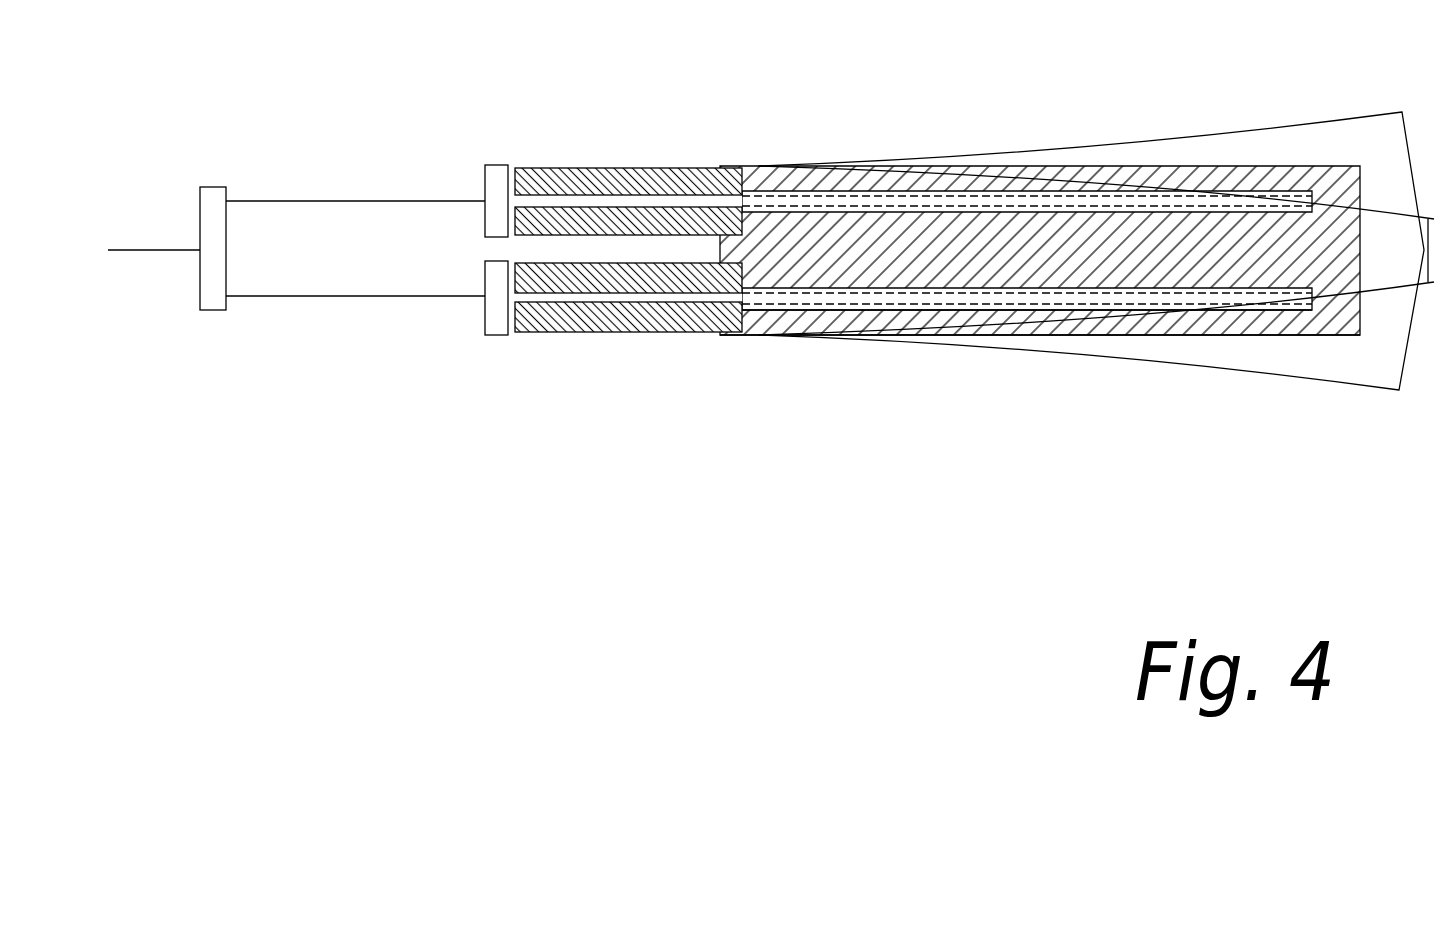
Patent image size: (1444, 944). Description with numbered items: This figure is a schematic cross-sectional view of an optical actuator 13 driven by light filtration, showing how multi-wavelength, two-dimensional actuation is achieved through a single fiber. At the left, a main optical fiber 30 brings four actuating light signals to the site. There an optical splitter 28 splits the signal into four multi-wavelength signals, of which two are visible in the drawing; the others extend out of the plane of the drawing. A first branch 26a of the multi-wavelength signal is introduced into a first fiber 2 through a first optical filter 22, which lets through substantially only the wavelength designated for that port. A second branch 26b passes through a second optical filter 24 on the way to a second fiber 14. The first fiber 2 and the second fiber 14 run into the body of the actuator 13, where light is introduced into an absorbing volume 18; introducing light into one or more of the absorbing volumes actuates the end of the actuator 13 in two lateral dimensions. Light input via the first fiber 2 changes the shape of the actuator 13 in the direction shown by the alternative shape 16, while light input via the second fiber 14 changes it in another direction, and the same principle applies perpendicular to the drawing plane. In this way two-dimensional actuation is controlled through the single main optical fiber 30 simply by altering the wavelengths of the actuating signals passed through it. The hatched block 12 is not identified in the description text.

The first fiber 2 is at (612, 295).
The housing block 12 is at (1310, 352).
The actuator 13 is at (917, 320).
The second fiber 14 is at (640, 195).
The alternative shape 16 is at (1243, 155).
The absorbing volume 18 is at (1043, 297).
The first optical filter 22 is at (497, 315).
The second optical filter 24 is at (497, 183).
The first branch 26a is at (347, 297).
The second branch 26b is at (358, 200).
The optical splitter 28 is at (213, 200).
The main optical fiber 30 is at (160, 252).